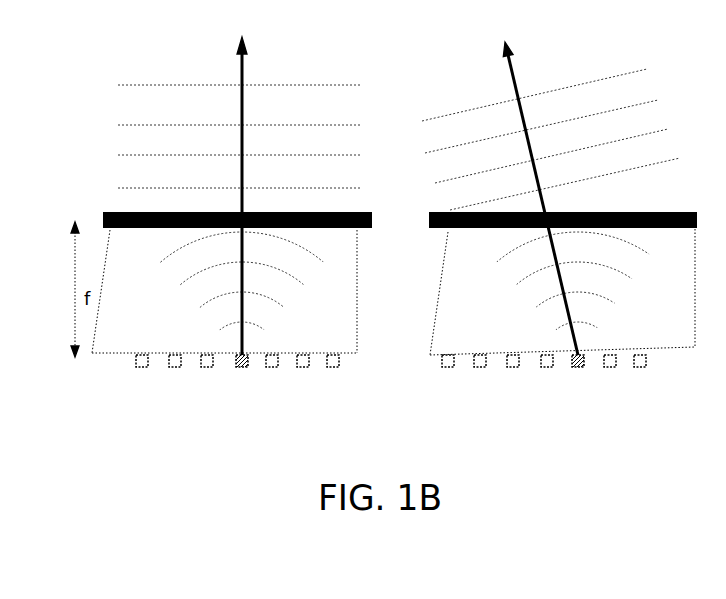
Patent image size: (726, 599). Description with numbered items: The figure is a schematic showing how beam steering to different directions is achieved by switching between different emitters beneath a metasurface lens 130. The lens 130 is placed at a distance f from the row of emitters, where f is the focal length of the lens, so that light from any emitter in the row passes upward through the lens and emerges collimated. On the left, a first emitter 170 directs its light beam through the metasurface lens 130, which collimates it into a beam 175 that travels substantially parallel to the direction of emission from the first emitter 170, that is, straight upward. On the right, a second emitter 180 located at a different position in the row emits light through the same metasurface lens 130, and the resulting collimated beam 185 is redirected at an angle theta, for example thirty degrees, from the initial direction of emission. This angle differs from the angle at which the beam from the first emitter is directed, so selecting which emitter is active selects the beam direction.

The lens 130 is at (217, 201).
The first emitter 170 is at (237, 388).
The collimated beam 175 is at (332, 83).
The second emitter 180 is at (544, 385).
The collimated beam 185 is at (595, 63).